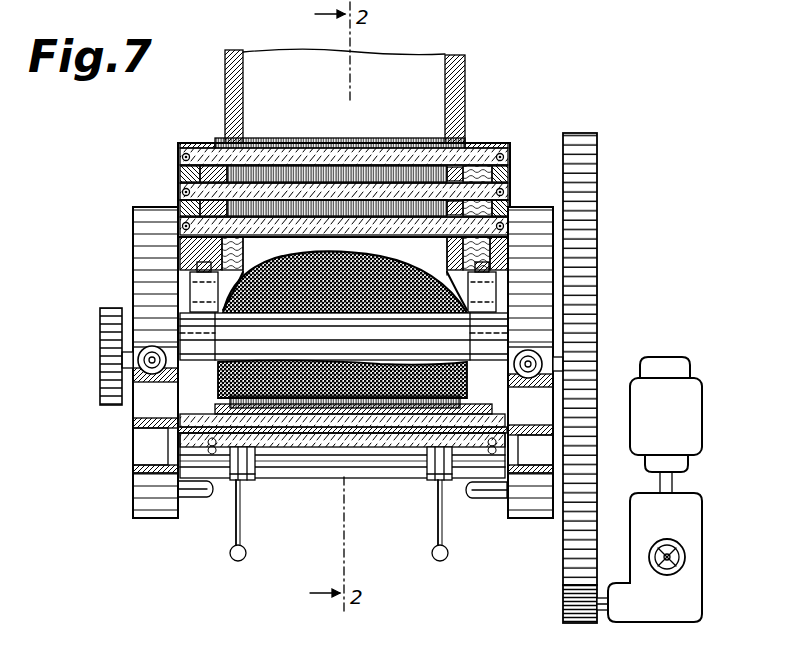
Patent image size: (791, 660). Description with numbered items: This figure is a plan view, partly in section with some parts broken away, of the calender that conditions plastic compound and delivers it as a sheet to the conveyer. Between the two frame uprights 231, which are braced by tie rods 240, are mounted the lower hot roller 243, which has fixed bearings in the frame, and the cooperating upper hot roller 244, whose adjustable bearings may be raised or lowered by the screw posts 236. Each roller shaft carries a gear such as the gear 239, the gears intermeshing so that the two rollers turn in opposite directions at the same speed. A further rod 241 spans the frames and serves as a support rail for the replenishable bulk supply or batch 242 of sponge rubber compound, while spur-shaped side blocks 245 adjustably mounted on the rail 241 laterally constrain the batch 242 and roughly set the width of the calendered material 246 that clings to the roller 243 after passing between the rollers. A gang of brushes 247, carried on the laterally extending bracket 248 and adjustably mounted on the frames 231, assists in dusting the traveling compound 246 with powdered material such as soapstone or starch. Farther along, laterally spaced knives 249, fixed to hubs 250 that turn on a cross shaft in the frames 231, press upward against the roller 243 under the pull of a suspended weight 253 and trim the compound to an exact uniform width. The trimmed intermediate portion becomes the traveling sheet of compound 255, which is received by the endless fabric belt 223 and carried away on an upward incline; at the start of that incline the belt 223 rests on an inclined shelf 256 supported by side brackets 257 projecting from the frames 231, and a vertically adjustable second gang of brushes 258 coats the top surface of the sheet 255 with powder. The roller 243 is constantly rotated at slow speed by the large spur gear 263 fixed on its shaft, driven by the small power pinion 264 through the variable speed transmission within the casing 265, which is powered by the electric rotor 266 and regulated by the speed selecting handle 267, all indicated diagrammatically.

The endless fabric belt 223 is at (225, 97).
The frame uprights 231 is at (145, 216).
The screw posts 236 is at (150, 346).
The gear 239 is at (103, 405).
The tie rods 240 is at (190, 498).
The rod 241 is at (243, 285).
The bulk supply batch 242 is at (302, 256).
The lower hot roller 243 is at (205, 402).
The upper hot roller 244 is at (200, 340).
The side blocks 245 is at (200, 310).
The calendered material 246 is at (172, 432).
The gang of brushes 247 is at (325, 412).
The bracket 248 is at (262, 450).
The knives 249 is at (235, 525).
The hubs 250 is at (250, 480).
The weight 253 is at (232, 558).
The traveling sheet of compound 255 is at (270, 62).
The inclined shelf 256 is at (180, 205).
The side brackets 257 is at (180, 172).
The second gang of brushes 258 is at (378, 195).
The large spur gear 263 is at (597, 204).
The power pinion 264 is at (565, 614).
The casing 265 is at (655, 557).
The electric rotor 266 is at (666, 425).
The speed selecting handle 267 is at (667, 576).